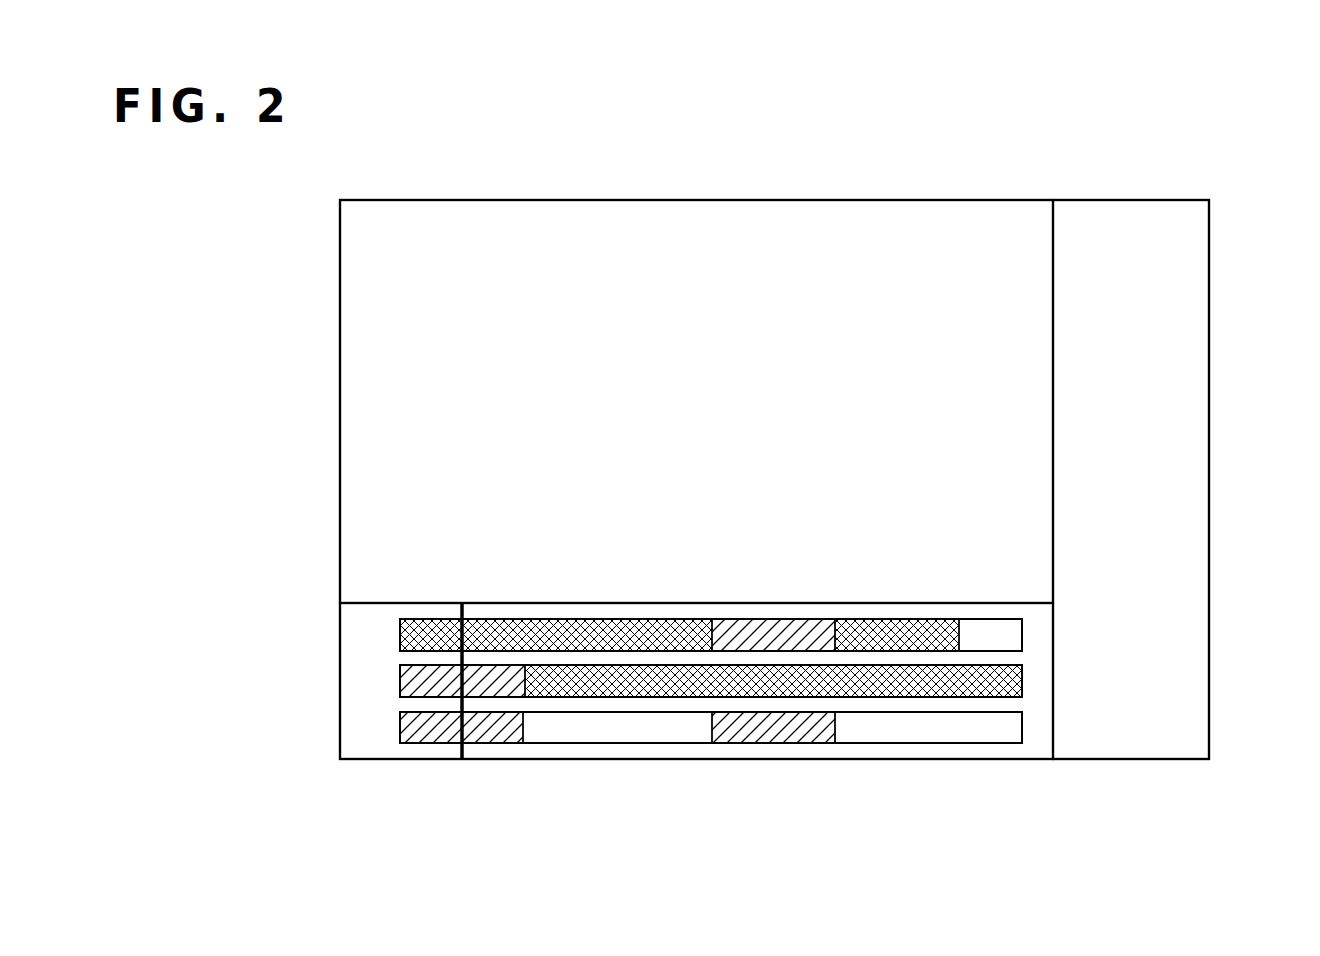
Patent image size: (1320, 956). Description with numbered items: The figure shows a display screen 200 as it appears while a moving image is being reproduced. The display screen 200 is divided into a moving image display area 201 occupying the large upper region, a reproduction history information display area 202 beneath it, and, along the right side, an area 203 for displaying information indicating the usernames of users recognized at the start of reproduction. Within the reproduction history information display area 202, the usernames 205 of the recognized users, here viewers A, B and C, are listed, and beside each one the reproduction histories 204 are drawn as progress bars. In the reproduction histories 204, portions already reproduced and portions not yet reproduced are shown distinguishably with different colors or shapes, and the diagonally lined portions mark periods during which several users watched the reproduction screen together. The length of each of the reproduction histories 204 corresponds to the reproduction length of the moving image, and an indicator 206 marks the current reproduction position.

The display screen 200 is at (562, 134).
The moving image display area 201 is at (772, 198).
The reproduction history information display area 202 is at (339, 670).
The area for displaying information indicating usernames 203 is at (1209, 257).
The reproduction histories 204 is at (887, 745).
The usernames 205 is at (390, 745).
The indicator 206 is at (466, 750).